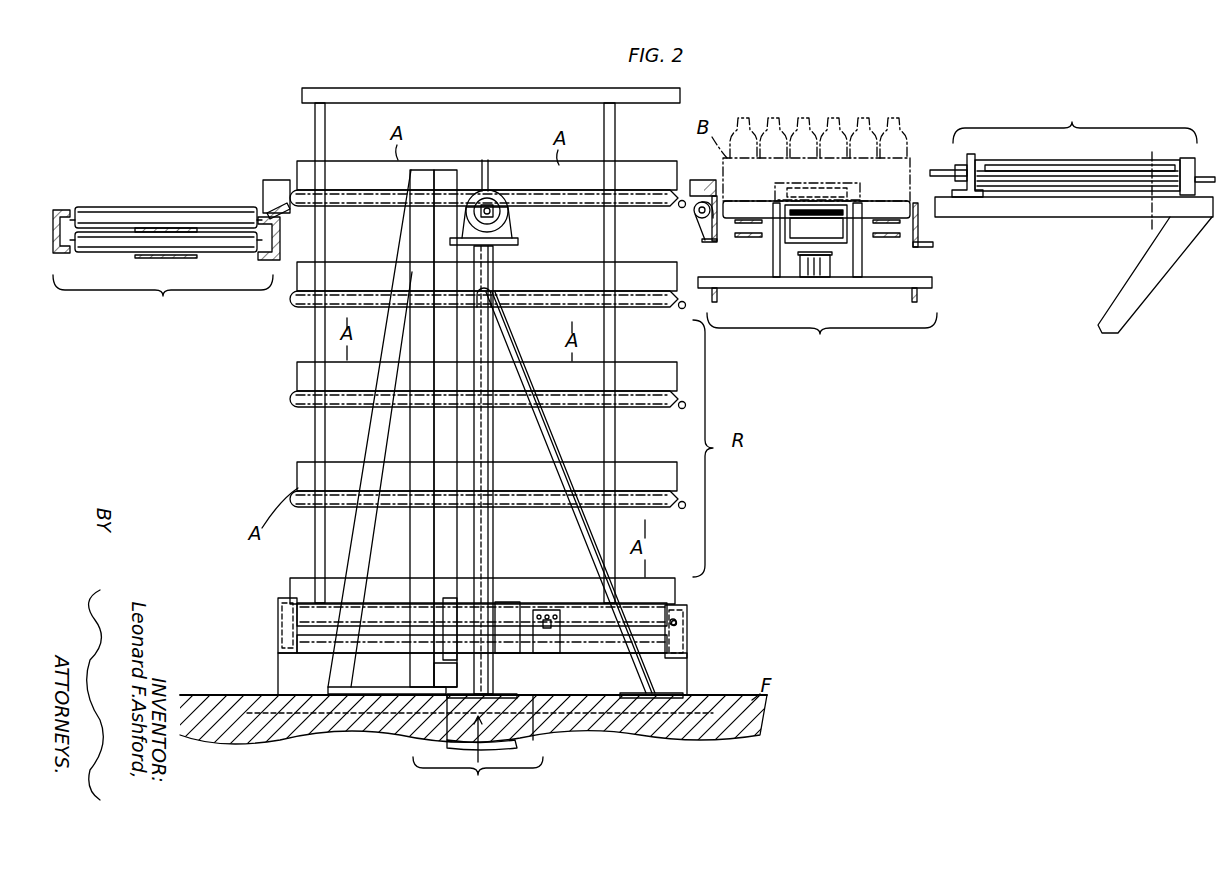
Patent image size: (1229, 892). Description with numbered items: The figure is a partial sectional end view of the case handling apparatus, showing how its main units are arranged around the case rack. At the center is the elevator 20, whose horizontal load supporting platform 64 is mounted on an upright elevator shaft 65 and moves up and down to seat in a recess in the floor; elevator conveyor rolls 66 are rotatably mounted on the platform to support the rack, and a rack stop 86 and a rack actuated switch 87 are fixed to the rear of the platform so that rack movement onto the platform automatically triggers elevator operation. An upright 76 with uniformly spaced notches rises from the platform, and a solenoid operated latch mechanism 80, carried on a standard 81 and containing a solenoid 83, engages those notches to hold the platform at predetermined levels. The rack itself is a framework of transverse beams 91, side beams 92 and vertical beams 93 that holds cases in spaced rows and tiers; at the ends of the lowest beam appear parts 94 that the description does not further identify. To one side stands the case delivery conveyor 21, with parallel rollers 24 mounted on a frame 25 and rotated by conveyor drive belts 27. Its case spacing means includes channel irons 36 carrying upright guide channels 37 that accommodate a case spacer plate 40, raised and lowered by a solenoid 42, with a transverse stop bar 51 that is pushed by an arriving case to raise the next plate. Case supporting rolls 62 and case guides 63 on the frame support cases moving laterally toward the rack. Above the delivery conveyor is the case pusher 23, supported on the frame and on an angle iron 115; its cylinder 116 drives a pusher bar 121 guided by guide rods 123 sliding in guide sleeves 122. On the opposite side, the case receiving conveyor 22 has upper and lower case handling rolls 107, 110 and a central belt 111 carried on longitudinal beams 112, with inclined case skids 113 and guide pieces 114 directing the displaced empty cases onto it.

The elevator 20 is at (478, 781).
The case delivery conveyor 21 is at (822, 339).
The case receiving conveyor 22 is at (163, 300).
The case pusher 23 is at (1075, 116).
The rollers 24 is at (886, 201).
The frame 25 is at (712, 243).
The conveyor drive belts 27 is at (750, 237).
The channel irons 36 is at (932, 288).
The upright guide channels 37 is at (773, 267).
The case spacer plate 40 is at (816, 224).
The solenoid 42 is at (815, 278).
The transverse stop bar 51 is at (818, 188).
The case supporting rolls 62 is at (695, 218).
The case guides 63 is at (703, 180).
The load supporting platform 64 is at (688, 674).
The elevator shaft 65 is at (520, 748).
The elevator conveyor rolls 66 is at (388, 613).
The upright 76 is at (490, 162).
The latch mechanism 80 is at (525, 200).
The standard 81 is at (494, 271).
The solenoid 83 is at (495, 198).
The rack stop 86 is at (506, 613).
The rack actuated switch 87 is at (547, 610).
The transverse beams 91 is at (585, 195).
The side beams 92 is at (679, 208).
The vertical beams 93 is at (326, 126).
The bearing block 94 is at (276, 612).
The upper case handling rolls 107 is at (105, 207).
The lower case handling rolls 110 is at (102, 252).
The belt 111 is at (197, 232).
The longitudinal beams 112 is at (60, 208).
The inclined case skids 113 is at (285, 212).
The guide pieces 114 is at (266, 183).
The angle iron 115 is at (1082, 217).
The cylinder 116 is at (1067, 166).
The pusher bar 121 is at (926, 170).
The guide sleeves 122 is at (1008, 170).
The guide rods 123 is at (952, 168).